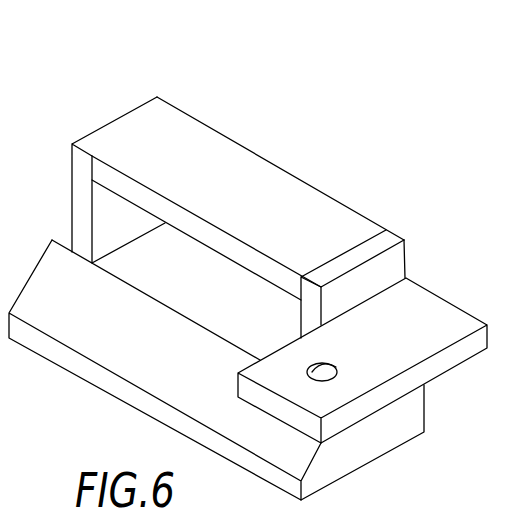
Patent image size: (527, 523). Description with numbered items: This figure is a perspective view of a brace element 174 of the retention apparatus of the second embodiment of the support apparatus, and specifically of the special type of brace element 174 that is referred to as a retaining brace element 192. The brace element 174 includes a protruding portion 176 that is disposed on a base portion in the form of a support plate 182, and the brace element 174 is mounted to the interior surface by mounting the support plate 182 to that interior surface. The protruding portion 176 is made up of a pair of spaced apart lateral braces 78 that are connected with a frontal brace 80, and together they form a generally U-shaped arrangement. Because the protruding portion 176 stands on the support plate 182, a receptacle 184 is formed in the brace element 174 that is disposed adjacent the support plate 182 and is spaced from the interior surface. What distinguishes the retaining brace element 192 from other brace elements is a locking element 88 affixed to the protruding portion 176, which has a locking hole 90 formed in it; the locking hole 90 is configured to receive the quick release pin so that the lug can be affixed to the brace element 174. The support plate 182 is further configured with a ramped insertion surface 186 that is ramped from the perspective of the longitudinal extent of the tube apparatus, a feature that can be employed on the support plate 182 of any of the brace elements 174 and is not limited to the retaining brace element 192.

The protruding portion 176 is at (241, 179).
The lateral braces 78 is at (71, 180).
The frontal brace 80 is at (235, 139).
The retaining brace element 192 is at (312, 174).
The brace element 174 is at (414, 242).
The locking element 88 is at (363, 348).
The locking hole 90 is at (333, 372).
The support plate 182 is at (357, 448).
The receptacle 184 is at (168, 279).
The ramped insertion surface 186 is at (216, 361).